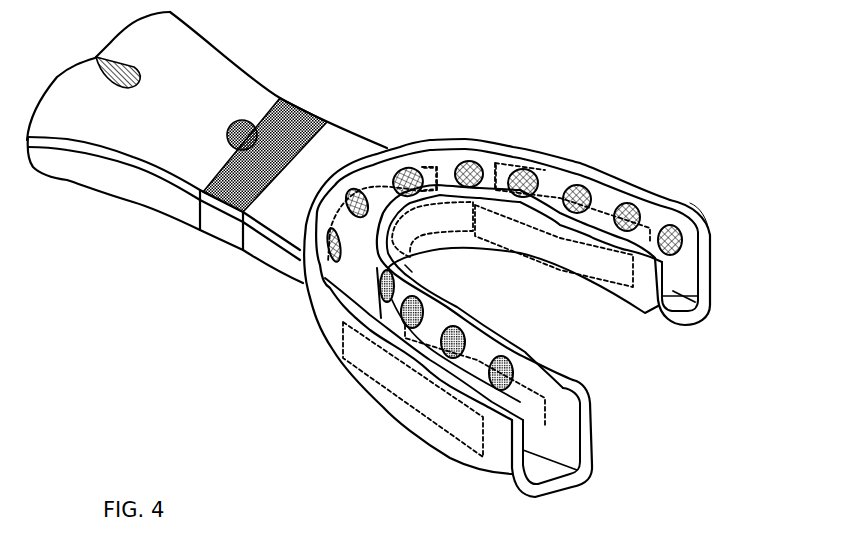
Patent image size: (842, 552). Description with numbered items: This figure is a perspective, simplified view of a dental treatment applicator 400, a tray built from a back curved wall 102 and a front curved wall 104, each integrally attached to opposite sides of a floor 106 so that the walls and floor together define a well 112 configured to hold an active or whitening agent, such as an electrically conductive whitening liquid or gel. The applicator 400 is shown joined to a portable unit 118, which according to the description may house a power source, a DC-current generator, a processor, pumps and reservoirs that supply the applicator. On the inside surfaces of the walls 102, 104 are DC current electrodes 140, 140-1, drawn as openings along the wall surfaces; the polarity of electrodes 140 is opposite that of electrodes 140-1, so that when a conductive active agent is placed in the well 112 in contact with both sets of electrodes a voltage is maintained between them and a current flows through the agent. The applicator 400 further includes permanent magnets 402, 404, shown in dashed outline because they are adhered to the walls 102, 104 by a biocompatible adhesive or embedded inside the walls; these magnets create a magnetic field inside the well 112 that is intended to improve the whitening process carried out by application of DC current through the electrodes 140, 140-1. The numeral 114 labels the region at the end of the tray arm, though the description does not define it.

The portable unit 118 is at (207, 72).
The dental treatment applicator 400 is at (493, 93).
The permanent magnet 404 is at (430, 167).
The front curved wall 104 is at (467, 167).
The well 112 is at (488, 162).
The DC current electrode 140-1 is at (575, 188).
The DC current electrode 140 is at (446, 330).
The tray arm tip 114 is at (700, 213).
The floor 106 is at (688, 297).
The back curved wall 102 is at (420, 276).
The permanent magnet 402 is at (633, 273).